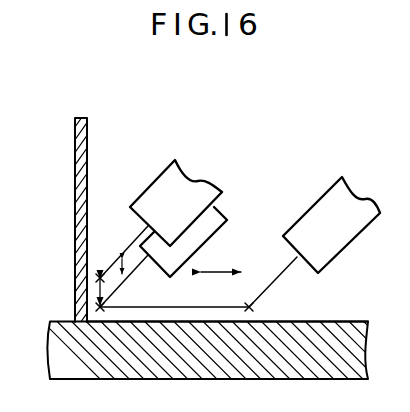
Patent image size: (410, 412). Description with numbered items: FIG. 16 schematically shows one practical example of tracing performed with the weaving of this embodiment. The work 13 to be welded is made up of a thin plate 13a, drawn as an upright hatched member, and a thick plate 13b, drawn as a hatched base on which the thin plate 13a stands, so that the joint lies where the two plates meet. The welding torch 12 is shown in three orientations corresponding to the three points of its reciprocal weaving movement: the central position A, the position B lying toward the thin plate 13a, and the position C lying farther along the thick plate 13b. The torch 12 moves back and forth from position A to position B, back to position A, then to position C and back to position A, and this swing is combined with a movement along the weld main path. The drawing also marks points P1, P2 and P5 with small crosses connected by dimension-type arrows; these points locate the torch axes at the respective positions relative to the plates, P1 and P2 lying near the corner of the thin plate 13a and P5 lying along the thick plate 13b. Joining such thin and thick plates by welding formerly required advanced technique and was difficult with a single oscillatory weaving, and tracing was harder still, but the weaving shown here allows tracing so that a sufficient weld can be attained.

The welding torch 12 is at (258, 209).
The work 13 is at (62, 328).
The thin plate 13a is at (22, 167).
The thick plate 13b is at (352, 291).
The position A is at (217, 209).
The position B is at (203, 184).
The position C is at (359, 198).
The reference point P1 is at (103, 307).
The reference point P2 is at (100, 273).
The reference point P5 is at (253, 308).